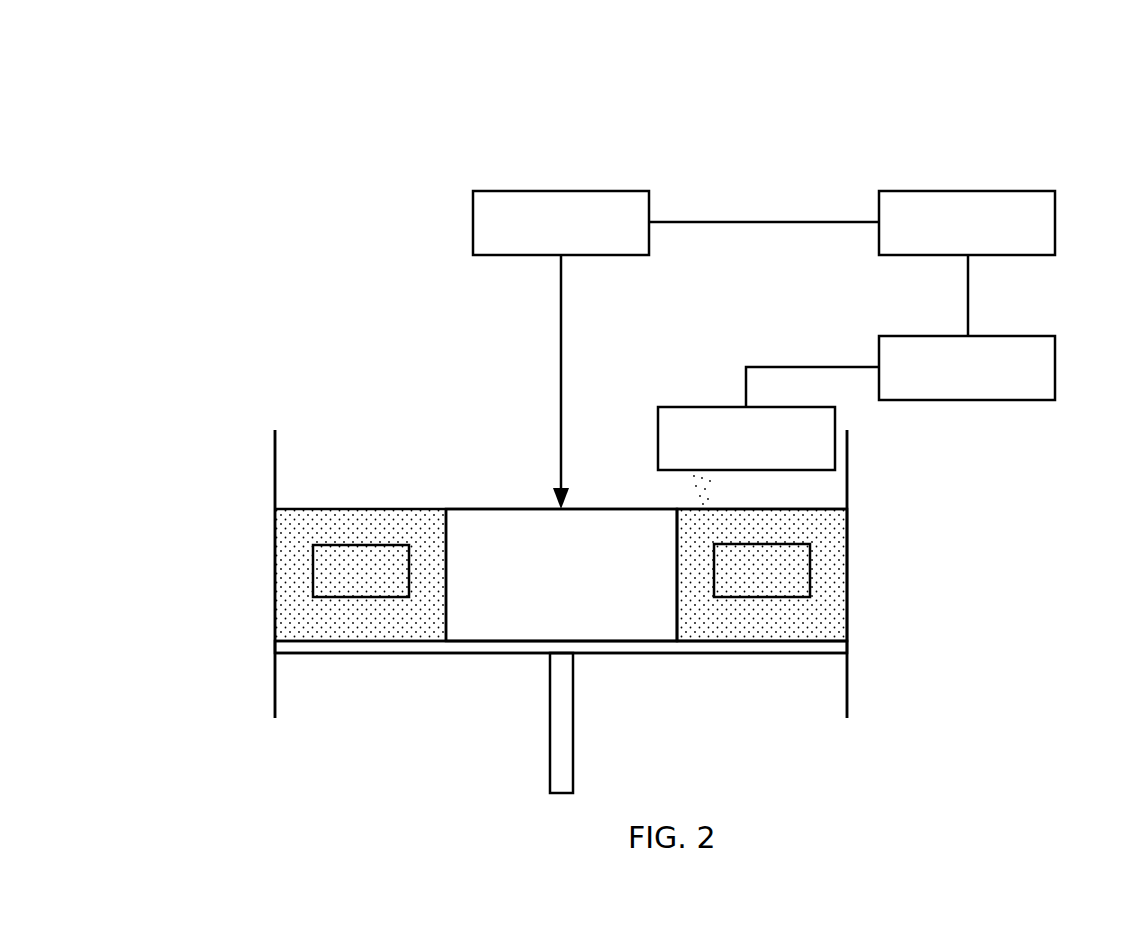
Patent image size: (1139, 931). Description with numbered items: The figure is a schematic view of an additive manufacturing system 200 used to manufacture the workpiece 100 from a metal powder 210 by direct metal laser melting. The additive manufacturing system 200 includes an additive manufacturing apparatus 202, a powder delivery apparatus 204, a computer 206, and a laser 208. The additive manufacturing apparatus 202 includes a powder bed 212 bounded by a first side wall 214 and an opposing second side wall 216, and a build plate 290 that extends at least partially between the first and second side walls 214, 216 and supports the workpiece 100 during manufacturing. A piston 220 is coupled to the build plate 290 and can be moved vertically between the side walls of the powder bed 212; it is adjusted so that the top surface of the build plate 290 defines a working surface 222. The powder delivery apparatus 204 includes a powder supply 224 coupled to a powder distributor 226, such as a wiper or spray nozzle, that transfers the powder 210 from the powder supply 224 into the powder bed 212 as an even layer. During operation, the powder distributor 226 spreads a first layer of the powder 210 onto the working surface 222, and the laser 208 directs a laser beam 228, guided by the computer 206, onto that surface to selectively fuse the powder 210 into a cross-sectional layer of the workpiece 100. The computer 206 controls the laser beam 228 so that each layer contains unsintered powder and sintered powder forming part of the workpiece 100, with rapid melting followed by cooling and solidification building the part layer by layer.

The additive manufacturing system 200 is at (358, 90).
The additive manufacturing apparatus 202 is at (462, 414).
The powder delivery apparatus 204 is at (768, 352).
The computer 206 is at (1055, 222).
The laser 208 is at (473, 222).
The metal powder 210 is at (361, 571).
The powder bed 212 is at (850, 538).
The first side wall 214 is at (275, 688).
The second side wall 216 is at (850, 680).
The piston 220 is at (573, 722).
The working surface 222 is at (710, 641).
The powder supply 224 is at (1055, 367).
The powder distributor 226 is at (658, 437).
The laser beam 228 is at (561, 343).
The build plate 290 is at (752, 654).
The workpiece 100 is at (561, 575).